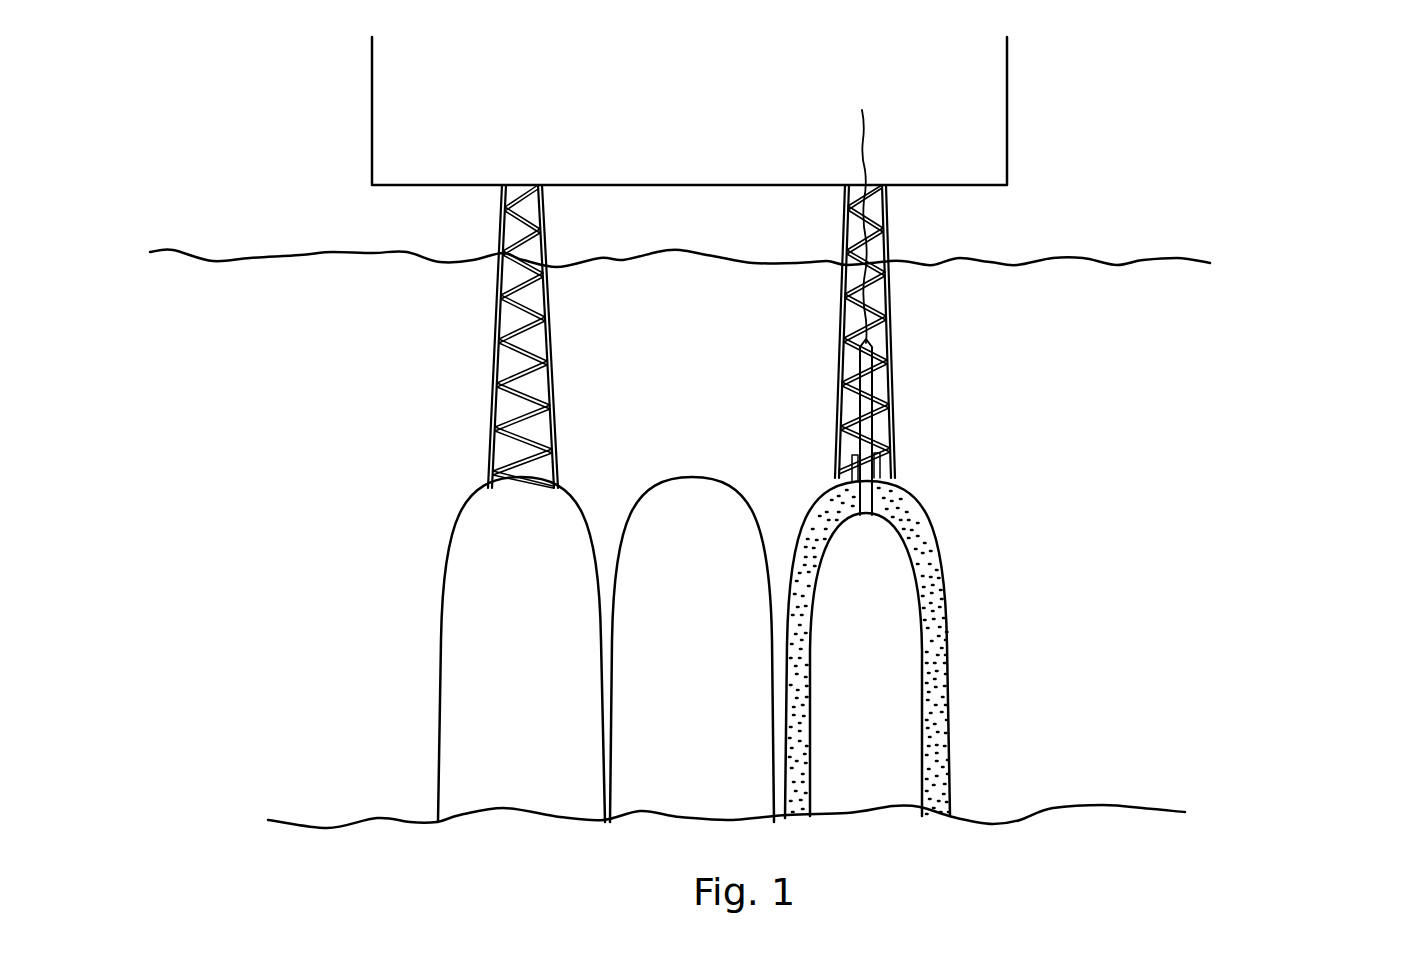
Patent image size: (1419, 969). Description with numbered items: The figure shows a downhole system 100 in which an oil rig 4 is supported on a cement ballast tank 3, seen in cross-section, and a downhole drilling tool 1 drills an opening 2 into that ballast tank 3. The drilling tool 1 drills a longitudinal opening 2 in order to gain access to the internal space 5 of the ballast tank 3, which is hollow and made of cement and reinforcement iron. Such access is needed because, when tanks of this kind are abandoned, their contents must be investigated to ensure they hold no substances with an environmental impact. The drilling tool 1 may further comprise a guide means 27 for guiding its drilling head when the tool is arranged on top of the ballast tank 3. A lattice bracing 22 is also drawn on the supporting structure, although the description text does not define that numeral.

The downhole system 100 is at (1262, 166).
The oil rig 4 is at (1156, 128).
The downhole drilling tool 1 is at (867, 393).
The lattice bracing 22 is at (847, 302).
The guide means 27 is at (895, 465).
The opening 2 is at (873, 495).
The ballast tank 3 is at (920, 622).
The internal space 5 is at (879, 695).